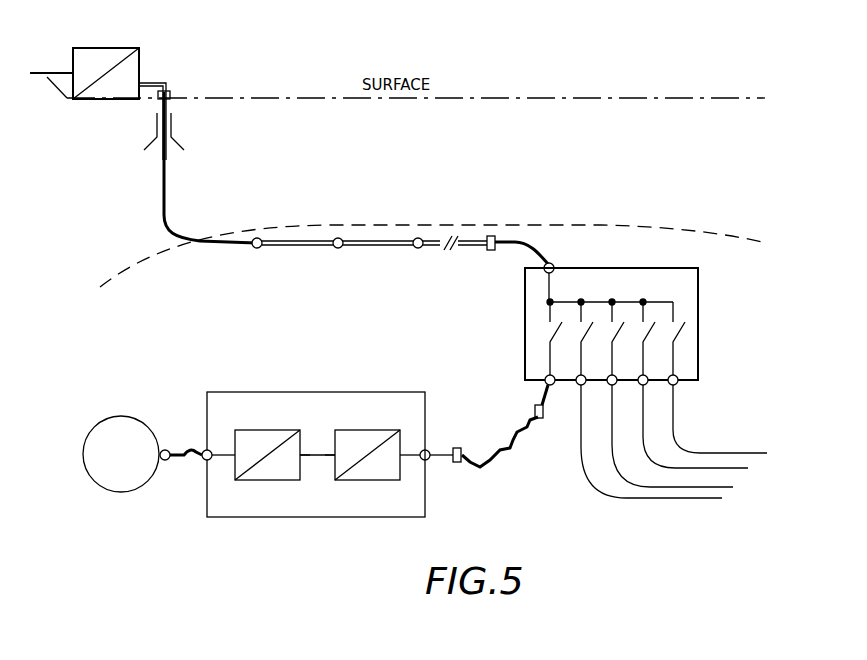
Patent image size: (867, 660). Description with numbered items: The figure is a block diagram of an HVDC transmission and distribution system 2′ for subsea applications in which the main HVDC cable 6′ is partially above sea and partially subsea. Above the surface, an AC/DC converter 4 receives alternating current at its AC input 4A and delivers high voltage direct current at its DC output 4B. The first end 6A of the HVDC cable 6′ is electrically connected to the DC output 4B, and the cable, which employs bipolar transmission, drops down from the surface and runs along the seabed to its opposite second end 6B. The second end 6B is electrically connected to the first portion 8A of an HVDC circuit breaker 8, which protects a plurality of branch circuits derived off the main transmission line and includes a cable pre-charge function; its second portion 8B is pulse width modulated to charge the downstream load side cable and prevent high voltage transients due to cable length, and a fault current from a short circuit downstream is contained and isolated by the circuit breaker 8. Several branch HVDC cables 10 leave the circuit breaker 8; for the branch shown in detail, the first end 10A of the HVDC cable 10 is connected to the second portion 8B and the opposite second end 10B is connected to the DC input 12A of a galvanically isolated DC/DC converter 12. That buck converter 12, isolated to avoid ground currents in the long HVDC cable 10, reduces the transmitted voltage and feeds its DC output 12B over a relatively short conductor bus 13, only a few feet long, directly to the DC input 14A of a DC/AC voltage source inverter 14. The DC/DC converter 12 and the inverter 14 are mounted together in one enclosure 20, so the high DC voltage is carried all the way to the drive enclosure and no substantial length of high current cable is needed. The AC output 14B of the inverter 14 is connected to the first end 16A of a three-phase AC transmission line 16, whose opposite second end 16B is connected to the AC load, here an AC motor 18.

The HVDC transmission and distribution system 2′ is at (608, 37).
The AC/DC converter 4 is at (95, 46).
The AC input 4A is at (72, 72).
The DC output 4B is at (147, 78).
The first end 6A is at (173, 92).
The HVDC cable 6′ is at (166, 192).
The second end 6B is at (492, 234).
The HVDC circuit breaker 8 is at (698, 318).
The first portion 8A is at (553, 262).
The second portion 8B is at (545, 385).
The HVDC cable 10 is at (509, 449).
The first end 10A is at (540, 418).
The second end 10B is at (456, 463).
The galvanically isolated DC/DC converter 12 is at (335, 475).
The DC input 12A is at (428, 449).
The DC output 12B is at (334, 440).
The conductor bus 13 is at (317, 457).
The DC/AC voltage source inverter 14 is at (270, 482).
The DC input 14A is at (306, 430).
The AC output 14B is at (235, 458).
The AC transmission line 16 is at (188, 464).
The first end 16A is at (207, 450).
The second end 16B is at (165, 449).
The AC motor 18 is at (110, 490).
The enclosure 20 is at (347, 519).